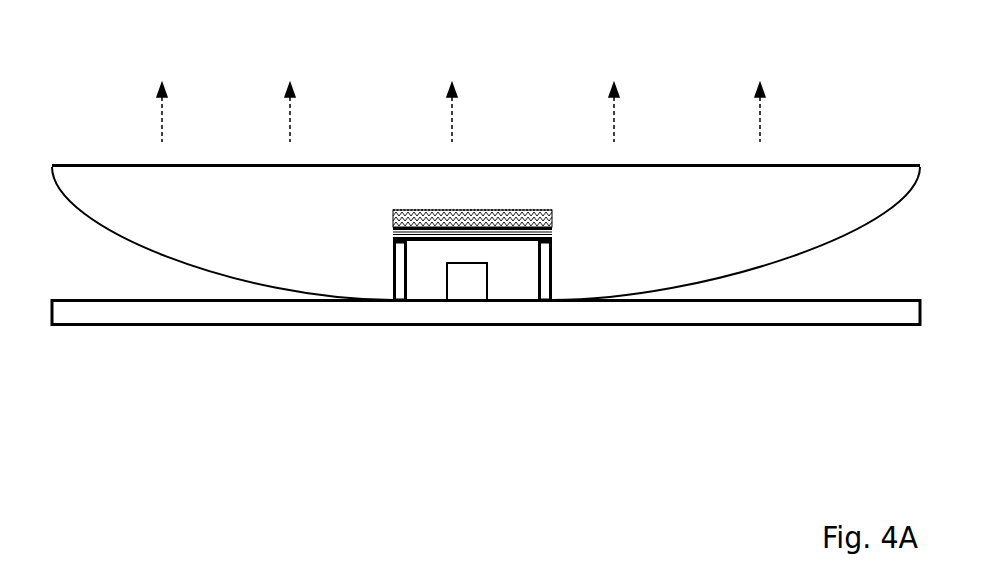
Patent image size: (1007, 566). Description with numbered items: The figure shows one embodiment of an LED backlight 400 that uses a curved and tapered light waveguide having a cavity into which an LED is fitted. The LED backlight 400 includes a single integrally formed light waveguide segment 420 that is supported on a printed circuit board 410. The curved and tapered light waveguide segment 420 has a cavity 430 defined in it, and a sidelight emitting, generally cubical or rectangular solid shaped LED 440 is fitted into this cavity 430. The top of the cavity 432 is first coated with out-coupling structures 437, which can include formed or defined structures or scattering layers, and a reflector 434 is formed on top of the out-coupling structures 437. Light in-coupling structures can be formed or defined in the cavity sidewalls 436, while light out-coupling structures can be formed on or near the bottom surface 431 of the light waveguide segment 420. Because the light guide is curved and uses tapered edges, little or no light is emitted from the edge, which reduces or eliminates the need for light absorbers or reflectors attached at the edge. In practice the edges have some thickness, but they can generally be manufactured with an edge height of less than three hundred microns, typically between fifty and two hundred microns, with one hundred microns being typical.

The LED backlight 400 is at (118, 77).
The printed circuit board 410 is at (692, 310).
The light waveguide segment 420 is at (795, 163).
The cavity 430 is at (488, 257).
The bottom surface 431 is at (160, 257).
The top of the cavity 432 is at (393, 213).
The reflector 434 is at (395, 230).
The cavity sidewalls 436 is at (553, 262).
The out-coupling structures 437 is at (510, 212).
The LED 440 is at (469, 278).